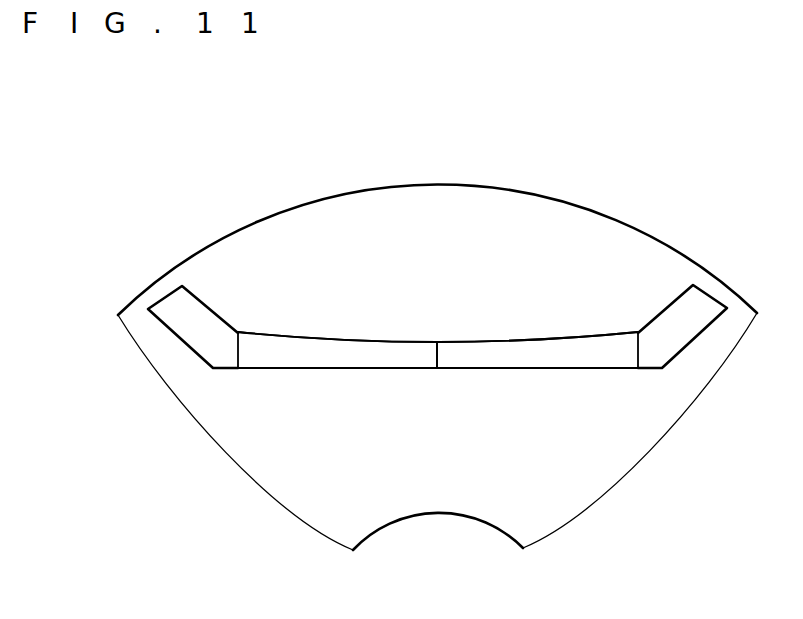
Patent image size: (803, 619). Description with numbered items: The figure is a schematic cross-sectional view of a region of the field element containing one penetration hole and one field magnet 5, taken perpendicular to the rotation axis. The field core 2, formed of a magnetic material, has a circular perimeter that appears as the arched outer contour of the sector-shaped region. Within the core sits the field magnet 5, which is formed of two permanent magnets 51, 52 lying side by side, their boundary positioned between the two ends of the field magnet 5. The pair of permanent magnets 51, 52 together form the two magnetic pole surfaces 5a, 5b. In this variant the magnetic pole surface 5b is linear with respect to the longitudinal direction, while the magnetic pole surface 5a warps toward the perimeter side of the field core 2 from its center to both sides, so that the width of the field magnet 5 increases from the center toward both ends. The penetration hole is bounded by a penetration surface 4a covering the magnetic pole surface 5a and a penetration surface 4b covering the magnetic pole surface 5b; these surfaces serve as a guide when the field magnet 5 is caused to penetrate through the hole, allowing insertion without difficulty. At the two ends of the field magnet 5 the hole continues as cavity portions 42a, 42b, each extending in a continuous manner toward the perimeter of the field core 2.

The field core 2 is at (575, 217).
The cavity portion 42a is at (195, 313).
The cavity portion 42b is at (678, 312).
The field magnet 5 is at (438, 369).
The magnetic pole surface 5a is at (459, 338).
The magnetic pole surface 5b is at (503, 370).
The permanent magnet 51 is at (417, 360).
The permanent magnet 52 is at (462, 360).
The penetration surface 4a is at (489, 342).
The penetration surface 4b is at (542, 367).